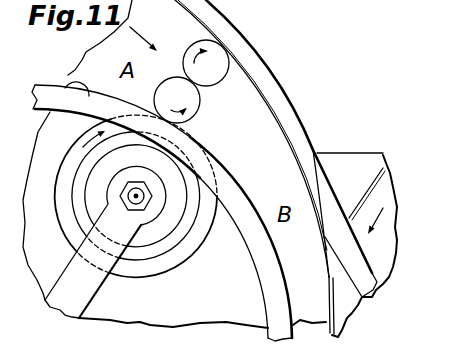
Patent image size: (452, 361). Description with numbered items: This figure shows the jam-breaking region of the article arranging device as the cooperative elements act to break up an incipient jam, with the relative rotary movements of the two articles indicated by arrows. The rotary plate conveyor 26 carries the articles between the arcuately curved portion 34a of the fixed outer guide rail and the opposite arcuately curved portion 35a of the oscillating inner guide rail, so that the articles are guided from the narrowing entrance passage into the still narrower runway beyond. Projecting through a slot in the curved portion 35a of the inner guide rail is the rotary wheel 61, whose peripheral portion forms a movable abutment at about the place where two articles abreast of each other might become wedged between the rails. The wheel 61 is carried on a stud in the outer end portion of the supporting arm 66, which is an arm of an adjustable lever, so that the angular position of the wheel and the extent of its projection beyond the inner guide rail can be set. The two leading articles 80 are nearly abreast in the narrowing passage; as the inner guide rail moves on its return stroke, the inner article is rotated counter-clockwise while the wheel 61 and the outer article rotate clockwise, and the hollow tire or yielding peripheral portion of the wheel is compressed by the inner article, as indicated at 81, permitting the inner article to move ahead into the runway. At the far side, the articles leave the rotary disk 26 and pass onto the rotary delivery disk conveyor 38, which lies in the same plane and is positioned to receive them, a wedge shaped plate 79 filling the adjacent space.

The rotary plate conveyor 26 is at (274, 141).
The arcuately curved portion of the outer guide rail 34a is at (226, 21).
The arcuately curved portion of the inner guide rail 35a is at (68, 75).
The rotary delivery disk conveyor 38 is at (348, 318).
The rotary wheel 61 is at (162, 248).
The supporting arm 66 is at (93, 288).
The wedge shaped plate 79 is at (355, 162).
The leading articles 80 is at (233, 99).
The compressed peripheral portion of the wheel 81 is at (160, 108).